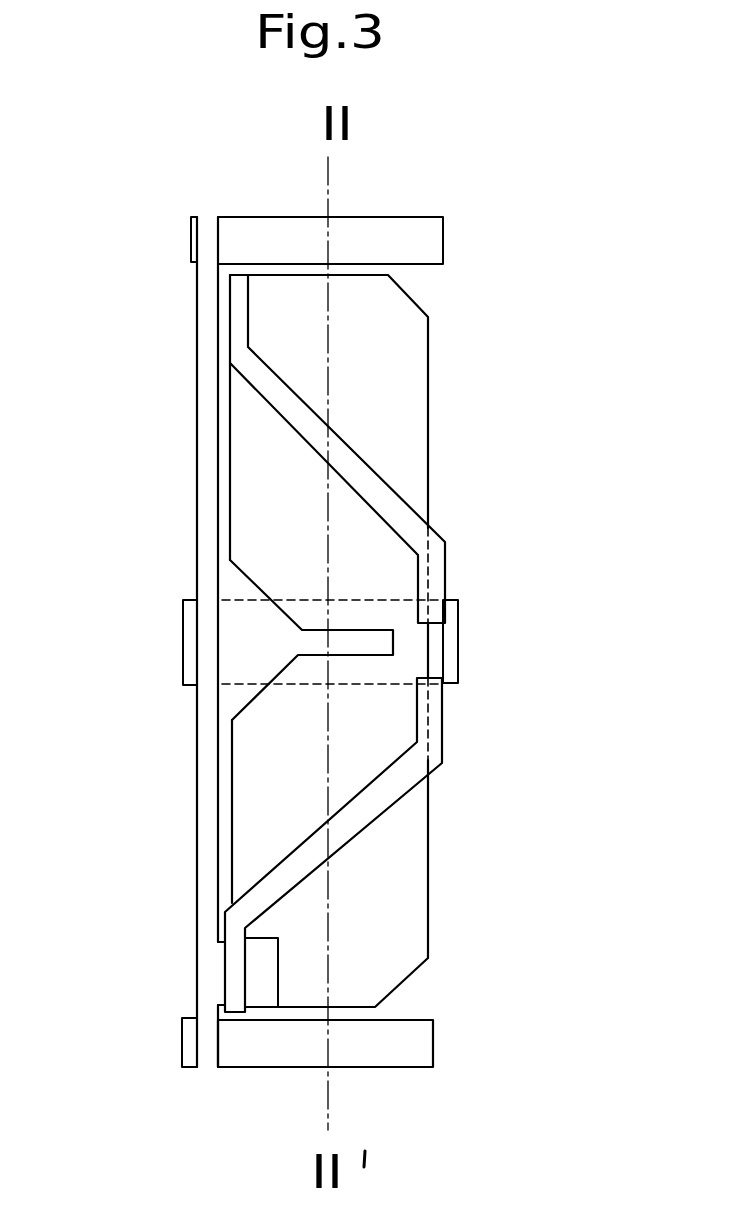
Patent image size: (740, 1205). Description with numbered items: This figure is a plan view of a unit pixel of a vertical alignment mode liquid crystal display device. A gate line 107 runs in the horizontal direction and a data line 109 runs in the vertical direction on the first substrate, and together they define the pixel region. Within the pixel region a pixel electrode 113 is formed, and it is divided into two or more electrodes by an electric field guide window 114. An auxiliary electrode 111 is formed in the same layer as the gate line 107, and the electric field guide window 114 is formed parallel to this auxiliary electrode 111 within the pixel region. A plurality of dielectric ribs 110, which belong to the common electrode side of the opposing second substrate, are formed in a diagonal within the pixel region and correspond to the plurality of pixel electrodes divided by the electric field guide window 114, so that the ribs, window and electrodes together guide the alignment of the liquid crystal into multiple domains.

The gate line 107 is at (416, 1043).
The data line 109 is at (210, 800).
The dielectric rib 110 is at (368, 487).
The auxiliary electrode 111 is at (443, 646).
The pixel electrode 113 is at (395, 347).
The electric field guide window 114 is at (381, 619).